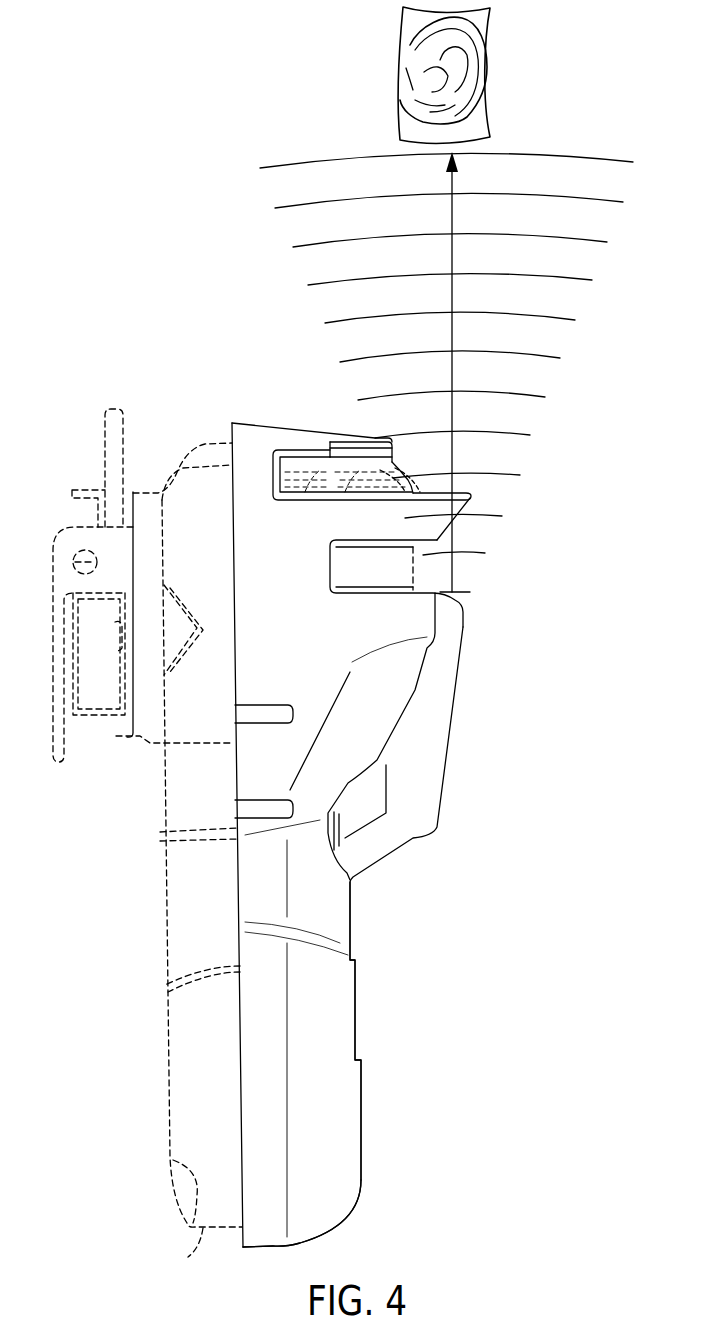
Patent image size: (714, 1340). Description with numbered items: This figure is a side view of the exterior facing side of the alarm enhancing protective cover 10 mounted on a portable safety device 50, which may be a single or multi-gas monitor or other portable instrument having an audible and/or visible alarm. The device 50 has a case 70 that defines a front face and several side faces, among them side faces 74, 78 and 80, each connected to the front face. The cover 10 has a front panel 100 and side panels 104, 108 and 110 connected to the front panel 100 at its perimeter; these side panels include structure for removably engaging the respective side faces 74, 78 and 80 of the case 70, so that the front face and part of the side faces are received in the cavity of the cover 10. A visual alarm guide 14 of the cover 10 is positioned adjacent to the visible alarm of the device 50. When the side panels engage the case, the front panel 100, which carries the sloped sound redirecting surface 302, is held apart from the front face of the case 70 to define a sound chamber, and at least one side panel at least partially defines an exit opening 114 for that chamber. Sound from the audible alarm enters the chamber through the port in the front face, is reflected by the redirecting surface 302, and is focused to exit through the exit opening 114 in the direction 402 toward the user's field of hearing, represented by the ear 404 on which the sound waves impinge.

The alarm enhancing protective cover 10 is at (500, 655).
The visual alarm guide 14 is at (365, 523).
The portable safety device 50 is at (138, 1120).
The case 70 is at (162, 907).
The side face 74 is at (193, 447).
The side face 78 is at (188, 1225).
The side face 80 is at (160, 790).
The front panel 100 is at (350, 915).
The side panel 104 is at (263, 435).
The side panel 108 is at (273, 1248).
The side panel 110 is at (328, 1000).
The exit opening 114 is at (315, 488).
The sound redirecting surface 302 is at (388, 855).
The direction 402 is at (451, 245).
The ear 404 is at (490, 85).